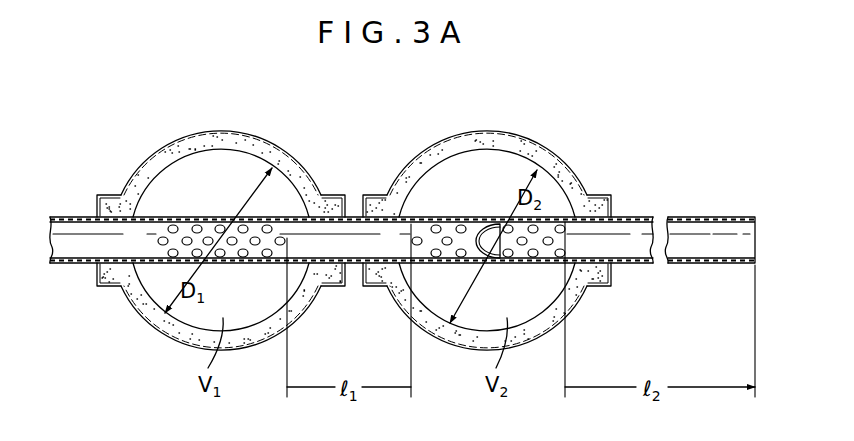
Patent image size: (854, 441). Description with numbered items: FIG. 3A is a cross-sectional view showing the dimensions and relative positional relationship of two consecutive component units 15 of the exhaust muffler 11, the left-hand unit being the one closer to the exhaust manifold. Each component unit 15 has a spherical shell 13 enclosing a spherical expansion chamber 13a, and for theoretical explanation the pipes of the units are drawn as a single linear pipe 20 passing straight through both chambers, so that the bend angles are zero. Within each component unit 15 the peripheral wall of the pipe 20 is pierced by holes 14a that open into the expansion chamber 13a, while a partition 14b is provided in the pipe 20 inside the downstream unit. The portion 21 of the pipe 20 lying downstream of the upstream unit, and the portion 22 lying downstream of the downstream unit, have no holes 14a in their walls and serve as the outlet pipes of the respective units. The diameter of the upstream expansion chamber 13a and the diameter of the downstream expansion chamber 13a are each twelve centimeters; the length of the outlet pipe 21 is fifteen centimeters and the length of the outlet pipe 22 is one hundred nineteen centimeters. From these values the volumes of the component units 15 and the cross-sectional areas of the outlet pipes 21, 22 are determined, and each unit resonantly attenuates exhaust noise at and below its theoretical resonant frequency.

The muffler unit 11 is at (200, 113).
The spherical shell 13 is at (270, 152).
The spherical expansion chamber 13a is at (233, 195).
The holes 14a is at (256, 246).
The partition 14b is at (483, 224).
The component unit 15 is at (163, 145).
The pipe 20 is at (705, 217).
The outlet pipe 21 is at (345, 240).
The outlet pipe 22 is at (630, 217).